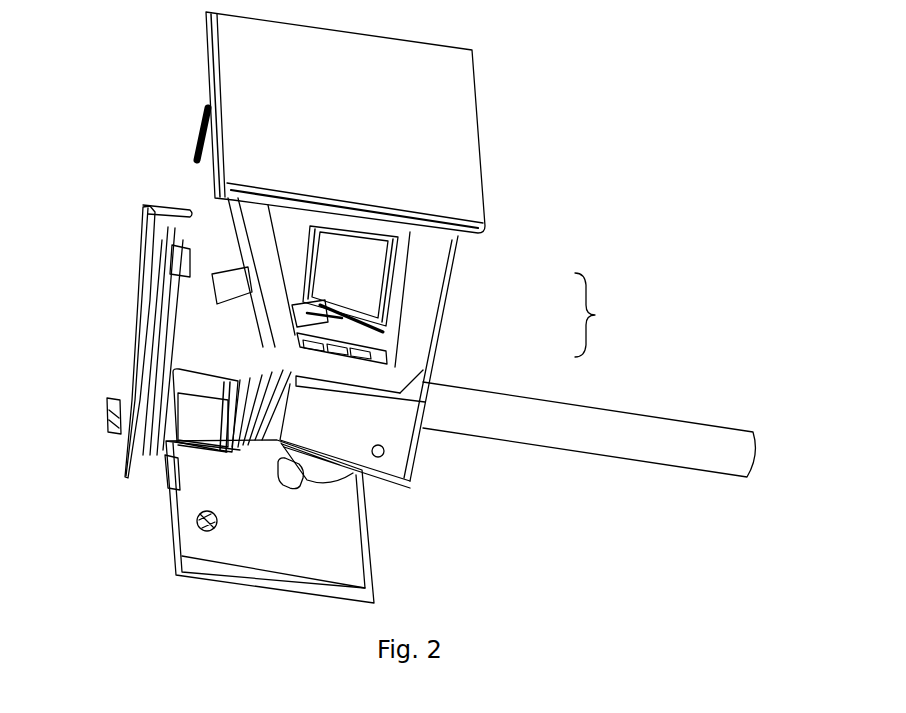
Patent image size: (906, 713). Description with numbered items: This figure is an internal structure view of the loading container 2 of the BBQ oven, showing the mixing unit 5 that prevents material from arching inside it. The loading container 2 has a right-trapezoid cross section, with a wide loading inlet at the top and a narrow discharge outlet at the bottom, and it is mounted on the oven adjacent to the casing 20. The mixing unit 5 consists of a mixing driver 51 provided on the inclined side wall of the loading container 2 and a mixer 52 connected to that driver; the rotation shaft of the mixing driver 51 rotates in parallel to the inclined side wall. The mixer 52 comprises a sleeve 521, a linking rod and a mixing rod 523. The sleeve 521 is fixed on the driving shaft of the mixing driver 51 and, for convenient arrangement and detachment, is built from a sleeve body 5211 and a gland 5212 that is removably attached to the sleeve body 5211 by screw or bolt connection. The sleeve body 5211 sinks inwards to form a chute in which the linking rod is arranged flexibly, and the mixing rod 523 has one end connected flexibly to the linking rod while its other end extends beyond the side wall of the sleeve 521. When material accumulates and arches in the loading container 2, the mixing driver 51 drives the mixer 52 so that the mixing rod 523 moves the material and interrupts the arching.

The loading container 2 is at (420, 233).
The mixing unit 5 is at (212, 284).
The mixing driver 51 is at (245, 282).
The mixer 52 is at (305, 318).
The sleeve 521 is at (621, 315).
The sleeve body 5211 is at (383, 332).
The gland 5212 is at (325, 305).
The mixing rod 523 is at (305, 280).
The casing 20 is at (393, 430).